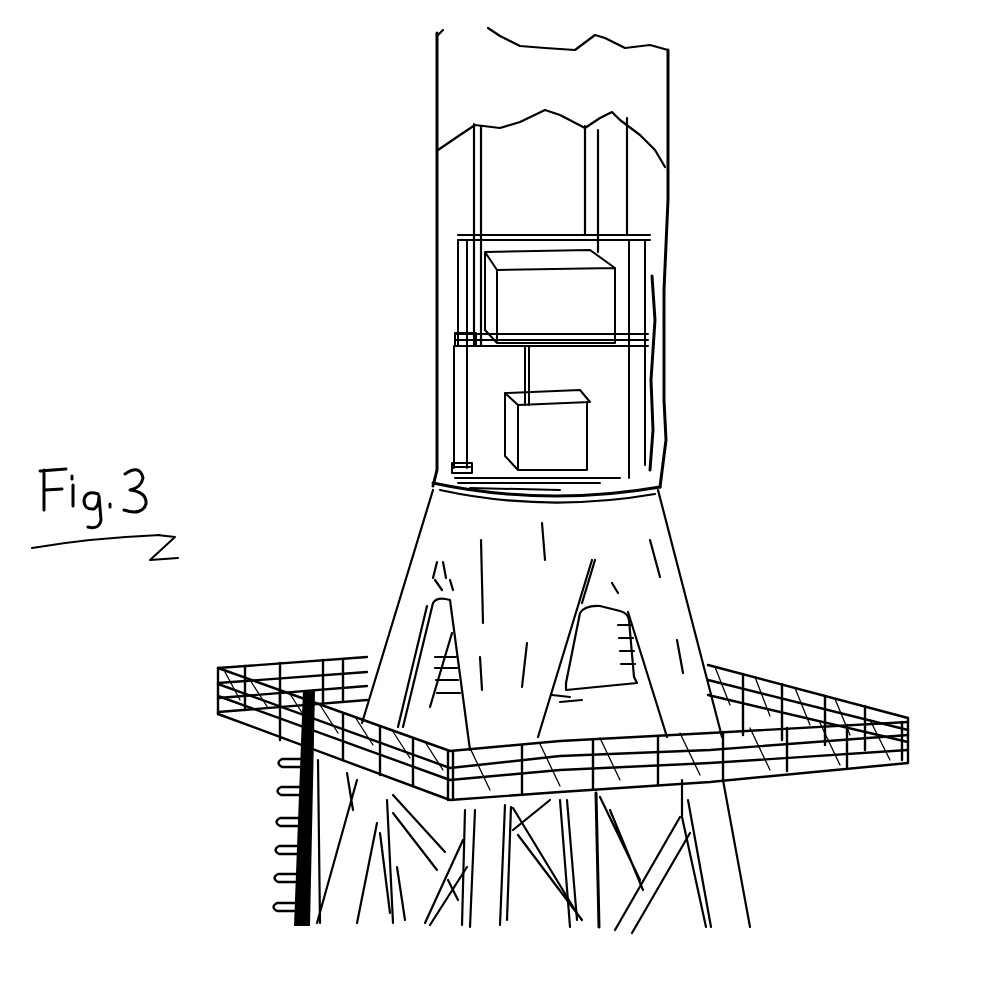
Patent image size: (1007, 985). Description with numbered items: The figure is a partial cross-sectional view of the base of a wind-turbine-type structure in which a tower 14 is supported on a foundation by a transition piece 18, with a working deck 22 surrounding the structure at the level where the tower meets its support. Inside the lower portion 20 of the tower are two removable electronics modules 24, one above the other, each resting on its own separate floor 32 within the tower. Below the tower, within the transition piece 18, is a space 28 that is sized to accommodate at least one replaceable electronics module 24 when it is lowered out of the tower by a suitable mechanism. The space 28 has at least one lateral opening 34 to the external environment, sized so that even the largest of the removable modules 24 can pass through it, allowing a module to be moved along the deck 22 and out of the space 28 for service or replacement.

The tower 14 is at (655, 95).
The transition piece 18 is at (633, 553).
The lower portion of the tower 20 is at (500, 483).
The working deck 22 is at (738, 722).
The electronics module 24 is at (587, 294).
The space 28 is at (448, 710).
The floor 32 is at (465, 338).
The lateral opening 34 is at (637, 637).